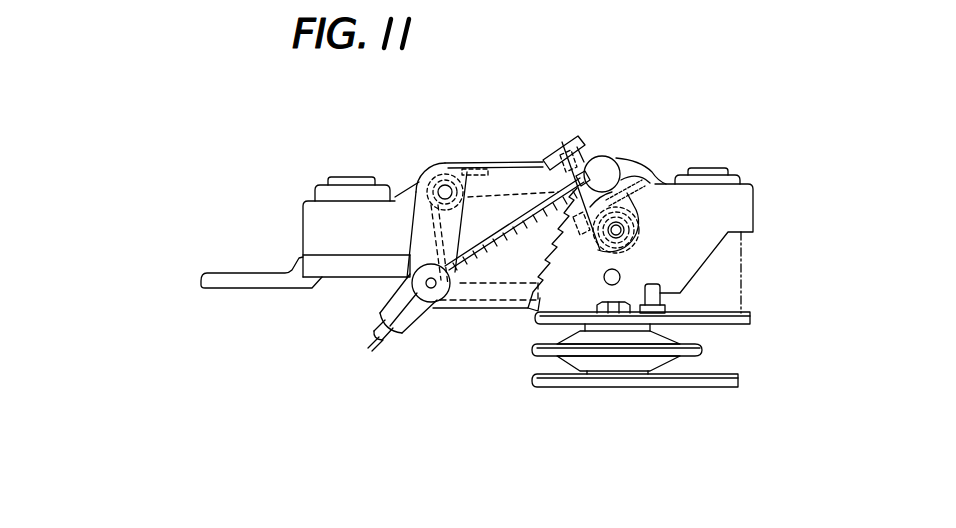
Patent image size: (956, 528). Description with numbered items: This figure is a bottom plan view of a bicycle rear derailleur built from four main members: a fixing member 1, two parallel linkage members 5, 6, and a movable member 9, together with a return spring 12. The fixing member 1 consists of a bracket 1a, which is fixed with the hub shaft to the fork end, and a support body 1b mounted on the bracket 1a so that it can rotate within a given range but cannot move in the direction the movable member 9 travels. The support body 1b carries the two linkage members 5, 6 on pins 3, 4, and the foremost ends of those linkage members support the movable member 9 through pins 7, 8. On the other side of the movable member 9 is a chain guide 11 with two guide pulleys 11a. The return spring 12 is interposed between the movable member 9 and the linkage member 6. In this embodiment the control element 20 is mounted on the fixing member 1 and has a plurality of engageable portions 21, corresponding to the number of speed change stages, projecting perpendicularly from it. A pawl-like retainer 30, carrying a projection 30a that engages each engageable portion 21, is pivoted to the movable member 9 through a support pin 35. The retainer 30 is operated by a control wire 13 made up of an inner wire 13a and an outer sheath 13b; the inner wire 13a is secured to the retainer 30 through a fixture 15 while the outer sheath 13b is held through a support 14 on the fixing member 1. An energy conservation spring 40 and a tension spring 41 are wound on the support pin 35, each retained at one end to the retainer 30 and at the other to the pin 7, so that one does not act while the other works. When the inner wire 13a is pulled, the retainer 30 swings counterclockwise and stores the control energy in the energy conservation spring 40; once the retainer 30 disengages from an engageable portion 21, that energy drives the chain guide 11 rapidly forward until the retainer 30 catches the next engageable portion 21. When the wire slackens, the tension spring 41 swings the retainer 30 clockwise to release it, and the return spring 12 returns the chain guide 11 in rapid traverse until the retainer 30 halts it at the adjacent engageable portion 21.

The fixing member 1 is at (251, 200).
The bracket 1a is at (261, 283).
The support body 1b is at (309, 213).
The pin 3 is at (445, 185).
The pin 4 is at (441, 305).
The linkage member 5 is at (475, 163).
The linkage member 6 is at (492, 300).
The pin 7 is at (652, 162).
The pin 8 is at (612, 285).
The movable member 9 is at (748, 213).
The chain guide 11 is at (731, 313).
The guide pulleys 11a is at (703, 351).
The return spring 12 is at (418, 186).
The control wire 13 is at (420, 391).
The inner wire 13a is at (371, 336).
The outer sheath 13b is at (412, 335).
The support 14 is at (447, 305).
The fixture 15 is at (610, 160).
The control element 20 is at (515, 175).
The engageable portions 21 is at (593, 145).
The retainer 30 is at (572, 142).
The projection 30a is at (556, 142).
The support pin 35 is at (634, 250).
The energy conservation spring 40 is at (628, 235).
The tension spring 41 is at (641, 216).